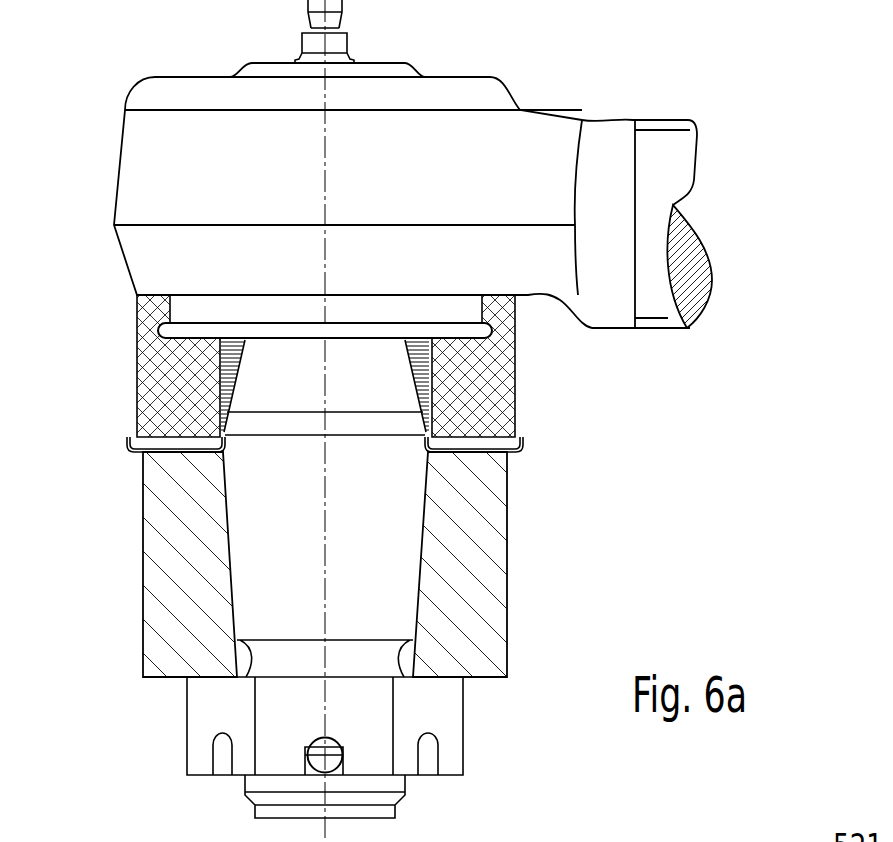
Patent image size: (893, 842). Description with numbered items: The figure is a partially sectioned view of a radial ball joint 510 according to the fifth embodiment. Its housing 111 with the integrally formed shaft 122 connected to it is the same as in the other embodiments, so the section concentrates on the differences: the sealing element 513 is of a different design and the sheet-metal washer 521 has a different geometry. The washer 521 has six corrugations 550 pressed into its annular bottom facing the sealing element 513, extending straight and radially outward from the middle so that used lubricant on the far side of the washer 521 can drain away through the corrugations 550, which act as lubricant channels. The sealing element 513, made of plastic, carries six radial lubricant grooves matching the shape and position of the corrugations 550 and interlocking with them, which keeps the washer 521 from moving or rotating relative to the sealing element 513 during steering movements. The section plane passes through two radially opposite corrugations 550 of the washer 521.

The housing 111 is at (118, 146).
The shaft 122 is at (680, 145).
The radial ball joint 510 is at (558, 90).
The sealing element 513 is at (132, 385).
The sheet-metal washer 521 is at (530, 447).
The corrugations 550 is at (470, 457).